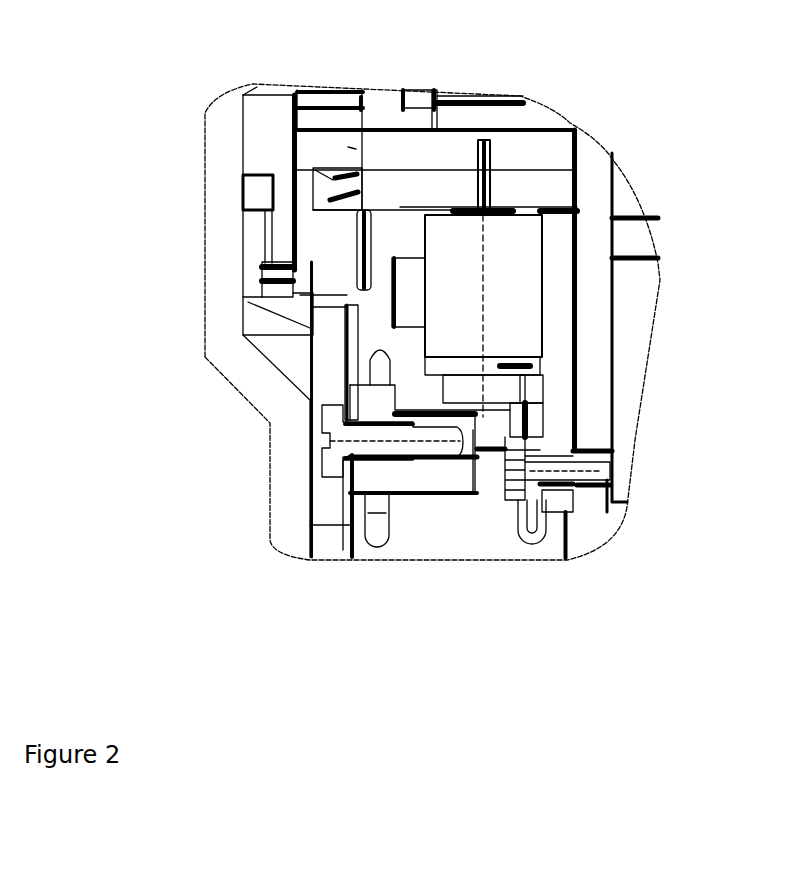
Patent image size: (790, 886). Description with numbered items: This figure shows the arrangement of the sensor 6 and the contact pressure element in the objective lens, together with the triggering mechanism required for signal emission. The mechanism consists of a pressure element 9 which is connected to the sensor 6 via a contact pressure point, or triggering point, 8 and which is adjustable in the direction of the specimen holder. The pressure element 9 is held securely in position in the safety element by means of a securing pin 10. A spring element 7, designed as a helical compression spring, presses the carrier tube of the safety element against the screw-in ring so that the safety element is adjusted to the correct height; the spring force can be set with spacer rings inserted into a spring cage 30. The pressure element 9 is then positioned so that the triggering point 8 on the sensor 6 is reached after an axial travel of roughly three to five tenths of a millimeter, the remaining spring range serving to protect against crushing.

The sensor 6 is at (523, 254).
The spring element 7 is at (345, 180).
The contact pressure point 8 is at (530, 418).
The pressure element 9 is at (437, 480).
The securing pin 10 is at (333, 462).
The spring cage 30 is at (352, 148).